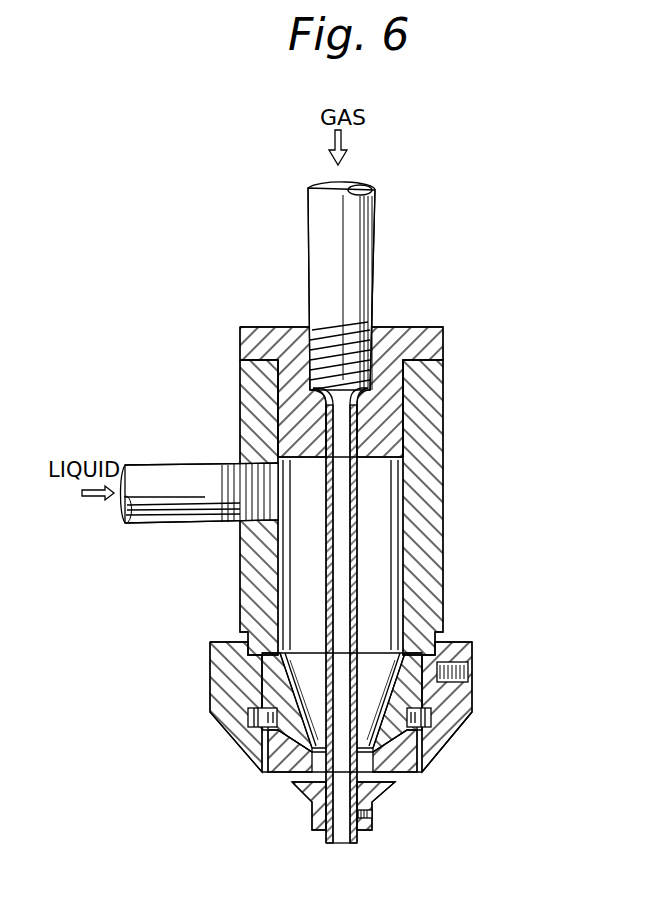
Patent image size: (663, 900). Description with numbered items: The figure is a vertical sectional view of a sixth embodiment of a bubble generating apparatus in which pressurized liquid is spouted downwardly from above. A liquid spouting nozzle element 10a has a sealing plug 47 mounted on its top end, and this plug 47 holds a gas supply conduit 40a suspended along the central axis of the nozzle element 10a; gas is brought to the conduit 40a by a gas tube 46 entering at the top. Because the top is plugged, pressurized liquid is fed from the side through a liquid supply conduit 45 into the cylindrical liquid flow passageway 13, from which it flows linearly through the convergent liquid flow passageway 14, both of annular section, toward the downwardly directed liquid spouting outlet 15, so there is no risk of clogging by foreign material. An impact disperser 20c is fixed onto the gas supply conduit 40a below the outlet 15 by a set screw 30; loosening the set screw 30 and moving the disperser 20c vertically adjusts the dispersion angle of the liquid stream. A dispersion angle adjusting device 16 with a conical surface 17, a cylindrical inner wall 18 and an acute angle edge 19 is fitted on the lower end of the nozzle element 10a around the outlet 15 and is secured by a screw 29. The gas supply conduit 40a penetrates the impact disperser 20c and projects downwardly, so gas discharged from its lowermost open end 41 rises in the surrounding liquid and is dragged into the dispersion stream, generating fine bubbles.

The nozzle element 10a is at (443, 493).
The cylindrical liquid flow passageway 13 is at (384, 566).
The convergent liquid flow passageway 14 is at (388, 683).
The liquid spouting outlet 15 is at (300, 752).
The dispersion angle adjusting device 16 is at (472, 700).
The conical surface 17 is at (455, 730).
The cylindrical inner wall 18 is at (422, 771).
The acute angle edge 19 is at (262, 771).
The impact disperser 20c is at (385, 797).
The set screw 29 is at (468, 674).
The set screw 30 is at (374, 816).
The gas supply conduit 40a is at (362, 490).
The lowermost open end 41 is at (331, 844).
The liquid supply conduit 45 is at (168, 465).
The gas supply tube 46 is at (375, 232).
The sealing plug 47 is at (410, 337).